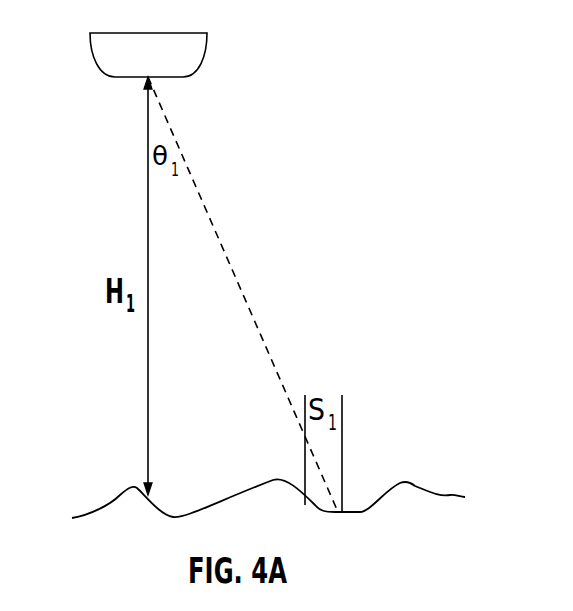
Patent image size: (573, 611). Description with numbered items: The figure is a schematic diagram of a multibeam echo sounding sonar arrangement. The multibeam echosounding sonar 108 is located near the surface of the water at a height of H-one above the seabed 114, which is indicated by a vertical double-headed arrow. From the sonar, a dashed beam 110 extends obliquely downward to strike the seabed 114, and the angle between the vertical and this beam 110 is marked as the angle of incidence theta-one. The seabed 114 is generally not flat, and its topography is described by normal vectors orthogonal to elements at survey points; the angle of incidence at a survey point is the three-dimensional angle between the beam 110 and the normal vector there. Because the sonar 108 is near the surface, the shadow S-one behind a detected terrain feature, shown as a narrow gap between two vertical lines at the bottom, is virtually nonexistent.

The multibeam echosounding sonar 108 is at (127, 33).
The beam 110 is at (243, 297).
The seabed 114 is at (443, 492).